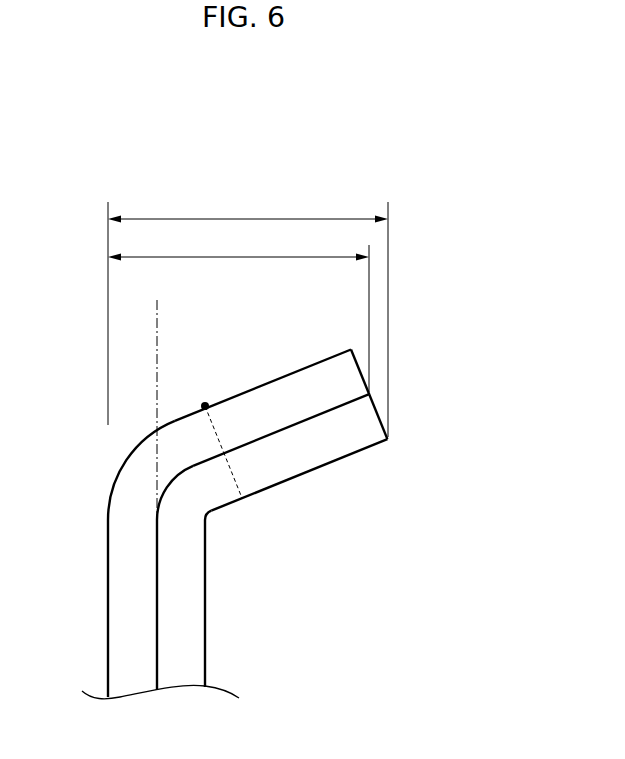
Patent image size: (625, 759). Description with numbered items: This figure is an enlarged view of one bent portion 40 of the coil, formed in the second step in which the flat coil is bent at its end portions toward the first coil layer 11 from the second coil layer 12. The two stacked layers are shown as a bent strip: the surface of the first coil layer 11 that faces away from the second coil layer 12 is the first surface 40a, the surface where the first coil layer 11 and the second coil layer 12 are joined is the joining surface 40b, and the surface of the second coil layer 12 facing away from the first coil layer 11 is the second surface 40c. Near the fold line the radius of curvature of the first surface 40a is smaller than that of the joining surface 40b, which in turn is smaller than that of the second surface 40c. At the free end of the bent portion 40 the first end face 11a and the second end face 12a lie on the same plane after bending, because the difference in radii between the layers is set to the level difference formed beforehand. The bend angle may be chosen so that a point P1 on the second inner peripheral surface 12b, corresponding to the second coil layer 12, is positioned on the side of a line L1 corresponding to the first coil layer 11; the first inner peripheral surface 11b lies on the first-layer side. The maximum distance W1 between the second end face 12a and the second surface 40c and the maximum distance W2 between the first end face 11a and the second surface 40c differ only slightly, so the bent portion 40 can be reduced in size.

The bent portion 40 is at (259, 353).
The first surface 40a is at (214, 512).
The joining surface 40b is at (153, 553).
The second surface 40c is at (140, 445).
The first coil layer 11 is at (190, 632).
The first end face 11a is at (378, 408).
The first inner peripheral surface 11b is at (233, 478).
The second coil layer 12 is at (130, 632).
The second end face 12a is at (364, 372).
The second inner peripheral surface 12b is at (215, 430).
The point P1 is at (206, 405).
The line L1 is at (152, 398).
The maximum distance W1 is at (238, 311).
The maximum distance W2 is at (248, 314).